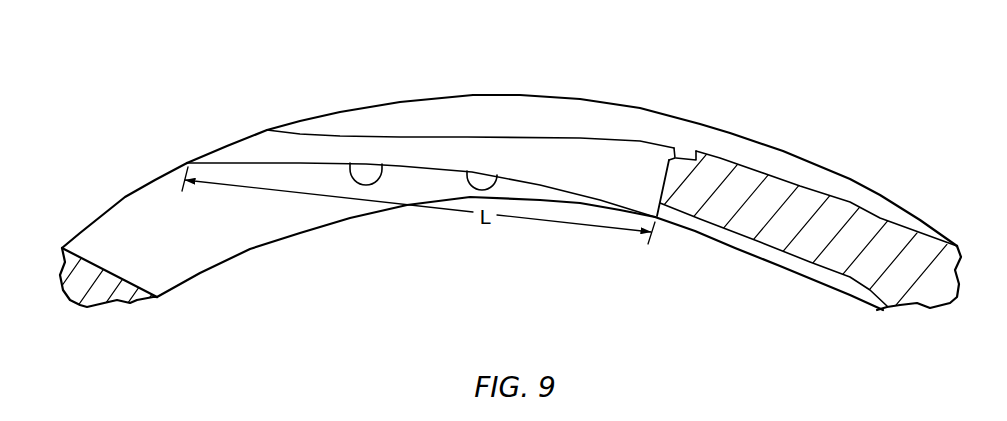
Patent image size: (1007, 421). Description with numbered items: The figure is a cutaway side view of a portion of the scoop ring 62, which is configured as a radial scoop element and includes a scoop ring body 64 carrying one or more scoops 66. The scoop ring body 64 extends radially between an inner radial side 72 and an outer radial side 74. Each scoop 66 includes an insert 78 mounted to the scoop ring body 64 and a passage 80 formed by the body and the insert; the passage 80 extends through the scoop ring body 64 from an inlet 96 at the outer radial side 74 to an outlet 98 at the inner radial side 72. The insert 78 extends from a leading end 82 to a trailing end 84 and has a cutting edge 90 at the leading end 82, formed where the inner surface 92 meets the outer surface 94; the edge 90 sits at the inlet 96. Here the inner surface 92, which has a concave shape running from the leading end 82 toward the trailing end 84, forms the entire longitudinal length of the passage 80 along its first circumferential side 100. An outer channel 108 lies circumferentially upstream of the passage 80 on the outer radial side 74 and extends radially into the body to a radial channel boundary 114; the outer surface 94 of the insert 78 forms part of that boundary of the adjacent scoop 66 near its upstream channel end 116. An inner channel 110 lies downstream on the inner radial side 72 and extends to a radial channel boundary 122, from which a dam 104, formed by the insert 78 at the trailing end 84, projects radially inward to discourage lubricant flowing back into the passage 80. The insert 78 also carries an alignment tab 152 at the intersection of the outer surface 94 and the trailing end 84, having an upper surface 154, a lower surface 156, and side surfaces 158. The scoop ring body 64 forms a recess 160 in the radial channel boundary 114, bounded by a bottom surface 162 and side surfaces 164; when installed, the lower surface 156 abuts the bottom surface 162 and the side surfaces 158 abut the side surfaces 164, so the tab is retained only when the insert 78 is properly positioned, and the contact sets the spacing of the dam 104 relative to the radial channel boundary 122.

The scoop ring 62 is at (823, 76).
The scoop ring body 64 is at (870, 253).
The scoop 66 is at (207, 104).
The inner radial side 72 is at (735, 254).
The outer radial side 74 is at (632, 101).
The insert 78 is at (518, 158).
The passage 80 is at (177, 243).
The leading end 82 is at (171, 159).
The trailing end 84 is at (692, 150).
The edge 90 is at (187, 161).
The inner surface 92 is at (378, 162).
The outer surface 94 is at (243, 140).
The inlet 96 is at (126, 193).
The outlet 98 is at (629, 254).
The first circumferential side 100 is at (472, 170).
The dam 104 is at (665, 234).
The outer channel 108 is at (687, 140).
The inner channel 110 is at (825, 272).
The radial channel boundary 114 is at (443, 138).
The upstream channel end 116 is at (270, 128).
The radial channel boundary 122 is at (780, 242).
The alignment tab 152 is at (677, 140).
The upper surface 154 is at (675, 146).
The lower surface 156 is at (683, 163).
The side surfaces 158 is at (728, 160).
The recess 160 is at (703, 181).
The bottom surface 162 is at (670, 157).
The side surfaces 164 is at (708, 145).